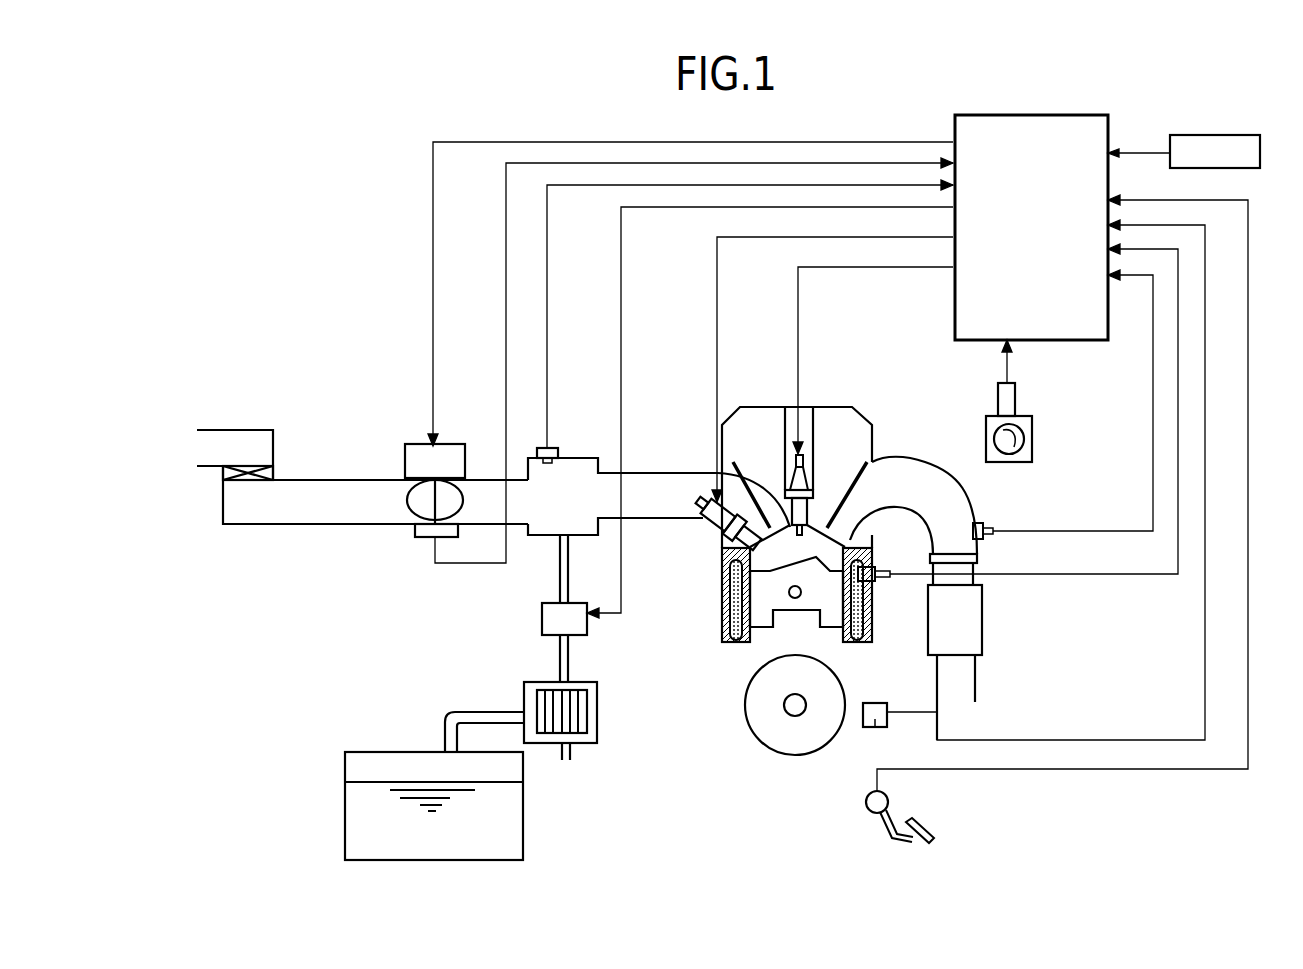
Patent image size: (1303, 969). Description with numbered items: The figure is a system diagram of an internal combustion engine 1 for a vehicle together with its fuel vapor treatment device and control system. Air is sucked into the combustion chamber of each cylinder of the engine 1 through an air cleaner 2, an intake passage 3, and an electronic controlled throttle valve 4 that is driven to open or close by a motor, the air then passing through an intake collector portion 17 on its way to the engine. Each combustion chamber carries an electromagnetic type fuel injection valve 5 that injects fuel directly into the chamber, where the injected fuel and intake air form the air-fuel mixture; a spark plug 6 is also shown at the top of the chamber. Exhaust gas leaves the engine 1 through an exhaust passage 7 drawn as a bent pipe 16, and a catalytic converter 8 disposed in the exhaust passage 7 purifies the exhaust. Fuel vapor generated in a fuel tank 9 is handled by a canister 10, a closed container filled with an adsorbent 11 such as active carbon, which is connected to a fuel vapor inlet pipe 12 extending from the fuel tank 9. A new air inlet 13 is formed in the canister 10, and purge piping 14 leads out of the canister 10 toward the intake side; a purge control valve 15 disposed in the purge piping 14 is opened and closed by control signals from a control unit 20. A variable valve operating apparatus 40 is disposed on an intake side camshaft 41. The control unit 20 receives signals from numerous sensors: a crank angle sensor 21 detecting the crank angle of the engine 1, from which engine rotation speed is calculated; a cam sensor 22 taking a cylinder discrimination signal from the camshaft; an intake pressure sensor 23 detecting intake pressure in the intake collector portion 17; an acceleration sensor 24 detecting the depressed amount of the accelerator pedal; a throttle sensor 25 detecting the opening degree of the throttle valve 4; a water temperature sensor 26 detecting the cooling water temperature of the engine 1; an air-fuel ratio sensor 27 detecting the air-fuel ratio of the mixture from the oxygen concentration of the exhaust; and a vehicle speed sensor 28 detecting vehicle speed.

The internal combustion engine 1 is at (712, 617).
The air cleaner 2 is at (240, 430).
The intake passage 3 is at (247, 505).
The electronic controlled throttle valve 4 is at (454, 444).
The fuel injection valve 5 is at (705, 517).
The spark plug 6 is at (788, 473).
The exhaust passage 7 is at (962, 487).
The catalytic converter 8 is at (982, 610).
The fuel tank 9 is at (345, 797).
The canister 10 is at (552, 708).
The adsorbent 11 is at (578, 723).
The fuel vapor inlet pipe 12 is at (448, 733).
The new air inlet 13 is at (565, 763).
The purge piping 14 is at (560, 667).
The purge control valve 15 is at (570, 623).
The exhaust passage 16 is at (900, 460).
The intake collector portion 17 is at (540, 535).
The control unit 20 is at (1032, 115).
The crank angle sensor 21 is at (873, 732).
The cam sensor 22 is at (1017, 393).
The intake pressure sensor 23 is at (551, 448).
The acceleration sensor 24 is at (867, 807).
The throttle sensor 25 is at (427, 537).
The water temperature sensor 26 is at (883, 583).
The air-fuel ratio sensor 27 is at (990, 522).
The vehicle speed sensor 28 is at (1213, 135).
The variable valve operating apparatus 40 is at (1032, 458).
The intake side camshaft 41 is at (1030, 430).